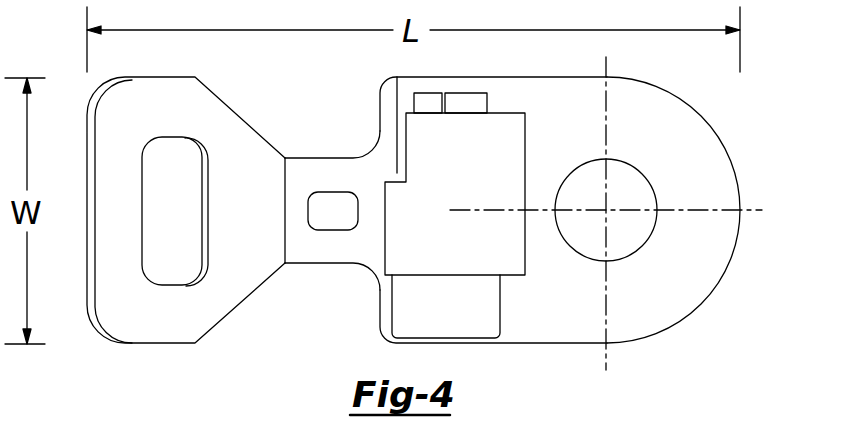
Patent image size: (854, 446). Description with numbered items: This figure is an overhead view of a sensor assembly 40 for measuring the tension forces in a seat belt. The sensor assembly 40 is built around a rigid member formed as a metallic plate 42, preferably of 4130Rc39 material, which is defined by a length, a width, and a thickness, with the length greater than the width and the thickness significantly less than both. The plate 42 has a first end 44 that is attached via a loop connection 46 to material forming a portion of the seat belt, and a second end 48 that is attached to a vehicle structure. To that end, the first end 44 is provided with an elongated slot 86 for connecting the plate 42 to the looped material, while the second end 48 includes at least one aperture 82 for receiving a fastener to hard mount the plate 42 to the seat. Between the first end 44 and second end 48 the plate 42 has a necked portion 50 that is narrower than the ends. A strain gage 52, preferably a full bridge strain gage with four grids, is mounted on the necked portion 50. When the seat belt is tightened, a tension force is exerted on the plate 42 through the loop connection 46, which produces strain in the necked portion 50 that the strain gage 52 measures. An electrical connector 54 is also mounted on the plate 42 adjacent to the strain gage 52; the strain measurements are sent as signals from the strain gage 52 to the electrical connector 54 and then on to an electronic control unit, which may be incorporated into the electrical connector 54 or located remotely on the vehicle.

The sensor assembly 40 is at (757, 161).
The plate 42 is at (520, 332).
The first end 44 is at (87, 165).
The loop connection 46 is at (150, 284).
The second end 48 is at (740, 233).
The necked portion 50 is at (333, 250).
The strain gage 52 is at (336, 202).
The electrical connector 54 is at (547, 126).
The aperture 82 is at (633, 200).
The elongated slot 86 is at (180, 160).